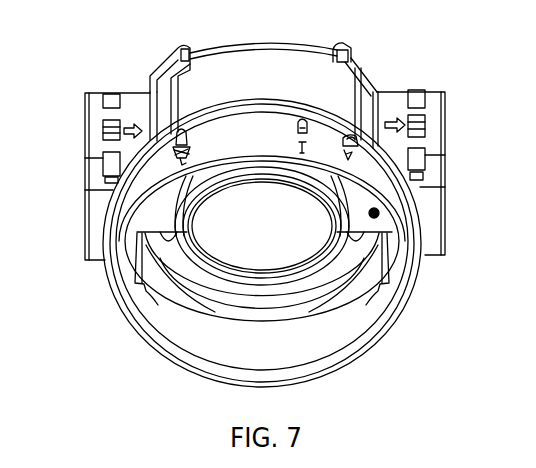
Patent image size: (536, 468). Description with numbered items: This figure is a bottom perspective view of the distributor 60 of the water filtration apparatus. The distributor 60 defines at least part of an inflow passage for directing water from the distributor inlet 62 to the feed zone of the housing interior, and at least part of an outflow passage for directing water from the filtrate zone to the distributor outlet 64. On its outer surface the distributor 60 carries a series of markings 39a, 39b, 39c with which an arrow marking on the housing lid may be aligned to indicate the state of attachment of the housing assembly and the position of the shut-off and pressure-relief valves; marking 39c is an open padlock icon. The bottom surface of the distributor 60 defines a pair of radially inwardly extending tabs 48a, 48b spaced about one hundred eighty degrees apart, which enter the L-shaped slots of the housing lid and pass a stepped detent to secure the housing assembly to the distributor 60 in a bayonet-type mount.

The distributor 60 is at (163, 59).
The distributor inlet 62 is at (85, 142).
The distributor outlet 64 is at (445, 133).
The marking 39a is at (189, 151).
The marking 39b is at (296, 134).
The open padlock icon marking 39c is at (358, 149).
The radially inwardly extending tab 48a is at (135, 284).
The radially inwardly extending tab 48b is at (397, 283).